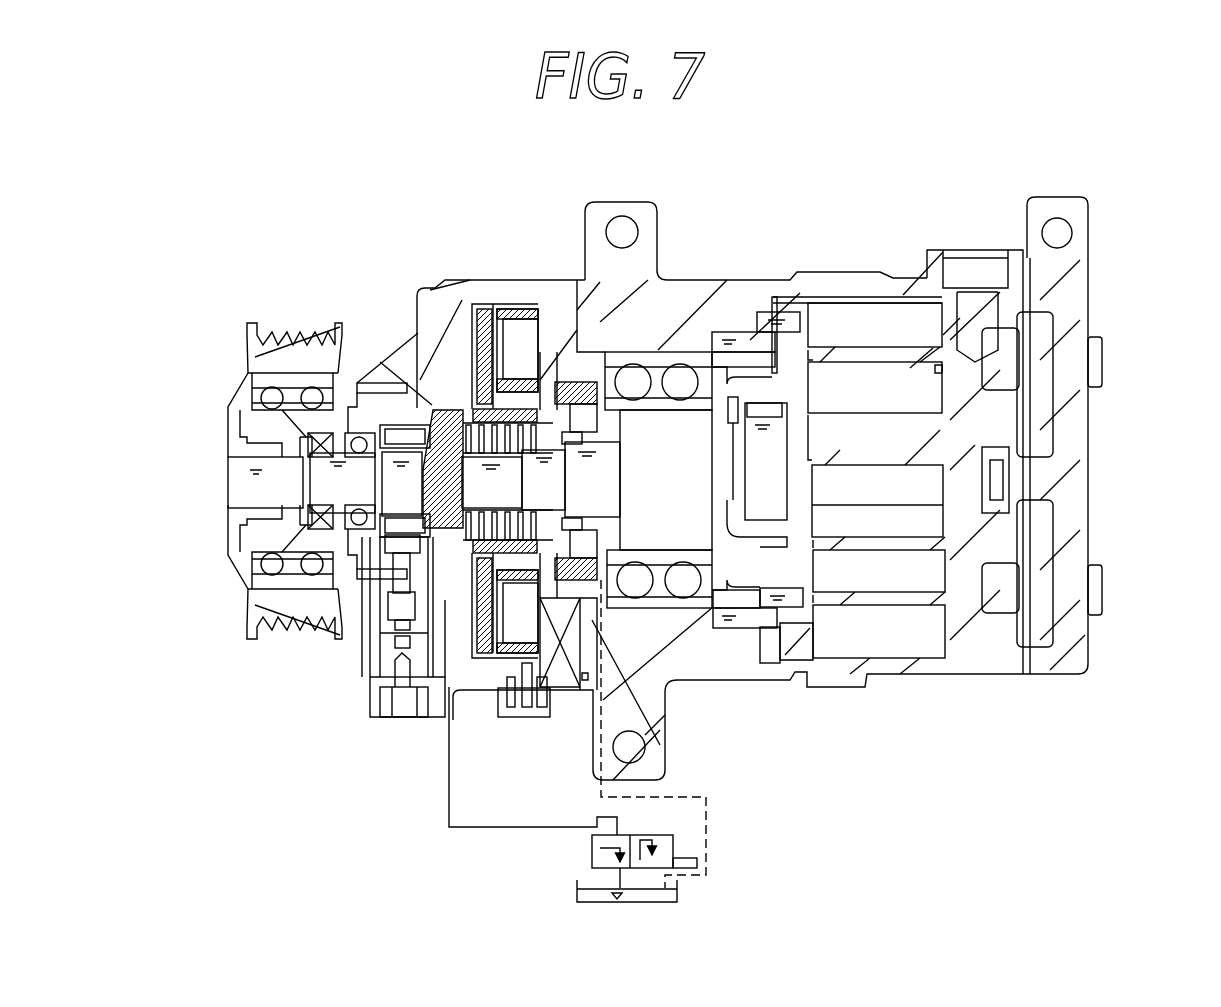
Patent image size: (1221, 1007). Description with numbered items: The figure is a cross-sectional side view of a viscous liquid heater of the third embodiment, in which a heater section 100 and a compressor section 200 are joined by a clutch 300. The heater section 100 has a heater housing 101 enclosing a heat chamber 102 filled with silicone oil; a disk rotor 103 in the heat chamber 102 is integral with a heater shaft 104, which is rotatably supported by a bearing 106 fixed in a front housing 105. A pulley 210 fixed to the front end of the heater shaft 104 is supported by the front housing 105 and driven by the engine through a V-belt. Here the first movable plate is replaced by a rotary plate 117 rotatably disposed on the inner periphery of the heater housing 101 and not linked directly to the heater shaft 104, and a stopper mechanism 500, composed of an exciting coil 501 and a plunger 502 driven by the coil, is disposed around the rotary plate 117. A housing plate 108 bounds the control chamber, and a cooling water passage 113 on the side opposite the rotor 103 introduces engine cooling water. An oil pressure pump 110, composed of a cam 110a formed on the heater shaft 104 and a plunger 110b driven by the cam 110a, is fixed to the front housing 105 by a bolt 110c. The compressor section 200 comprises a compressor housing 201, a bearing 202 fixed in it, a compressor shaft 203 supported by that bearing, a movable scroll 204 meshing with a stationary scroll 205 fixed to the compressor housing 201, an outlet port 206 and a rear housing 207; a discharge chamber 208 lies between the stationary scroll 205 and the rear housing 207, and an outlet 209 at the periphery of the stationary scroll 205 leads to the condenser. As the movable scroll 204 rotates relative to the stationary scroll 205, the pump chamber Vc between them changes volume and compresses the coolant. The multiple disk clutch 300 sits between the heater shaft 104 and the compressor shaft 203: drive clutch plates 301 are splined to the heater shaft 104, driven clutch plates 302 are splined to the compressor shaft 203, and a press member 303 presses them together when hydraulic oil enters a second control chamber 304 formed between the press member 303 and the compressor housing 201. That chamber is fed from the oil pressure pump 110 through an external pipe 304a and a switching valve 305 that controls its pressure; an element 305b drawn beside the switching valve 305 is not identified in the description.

The heater section 100 is at (510, 270).
The heater housing 101 is at (542, 300).
The heat chamber 102 is at (440, 332).
The disk rotor 103 is at (455, 660).
The heater shaft 104 is at (242, 491).
The front housing 105 is at (405, 375).
The bearing 106 is at (327, 627).
The housing plate 108 is at (660, 733).
The oil pressure pump 110 is at (372, 720).
The cam 110a is at (345, 640).
The plunger 110b is at (385, 650).
The bolt 110c is at (417, 720).
The cooling water passage 113 is at (610, 653).
The rotary plate 117 is at (460, 640).
The compressor section 200 is at (842, 268).
The compressor housing 201 is at (718, 330).
The bearing 202 is at (673, 450).
The compressor shaft 203 is at (655, 357).
The movable scroll 204 is at (775, 340).
The stationary scroll 205 is at (900, 297).
The outlet port 206 is at (887, 492).
The rear housing 207 is at (1088, 323).
The discharge chamber 208 is at (1040, 425).
The outlet 209 is at (970, 275).
The pulley 210 is at (268, 328).
The clutch 300 is at (585, 300).
The drive clutch plates 301 is at (417, 335).
The driven clutch plates 302 is at (400, 385).
The press member 303 is at (607, 677).
The second control chamber 304 is at (605, 640).
The external pipe 304a is at (490, 828).
The switching valve 305 is at (650, 823).
The signal line 305b is at (700, 855).
The stopper mechanism 500 is at (537, 720).
The exciting coil 501 is at (510, 717).
The plunger 502 is at (497, 660).
The pump chamber Vc is at (880, 528).